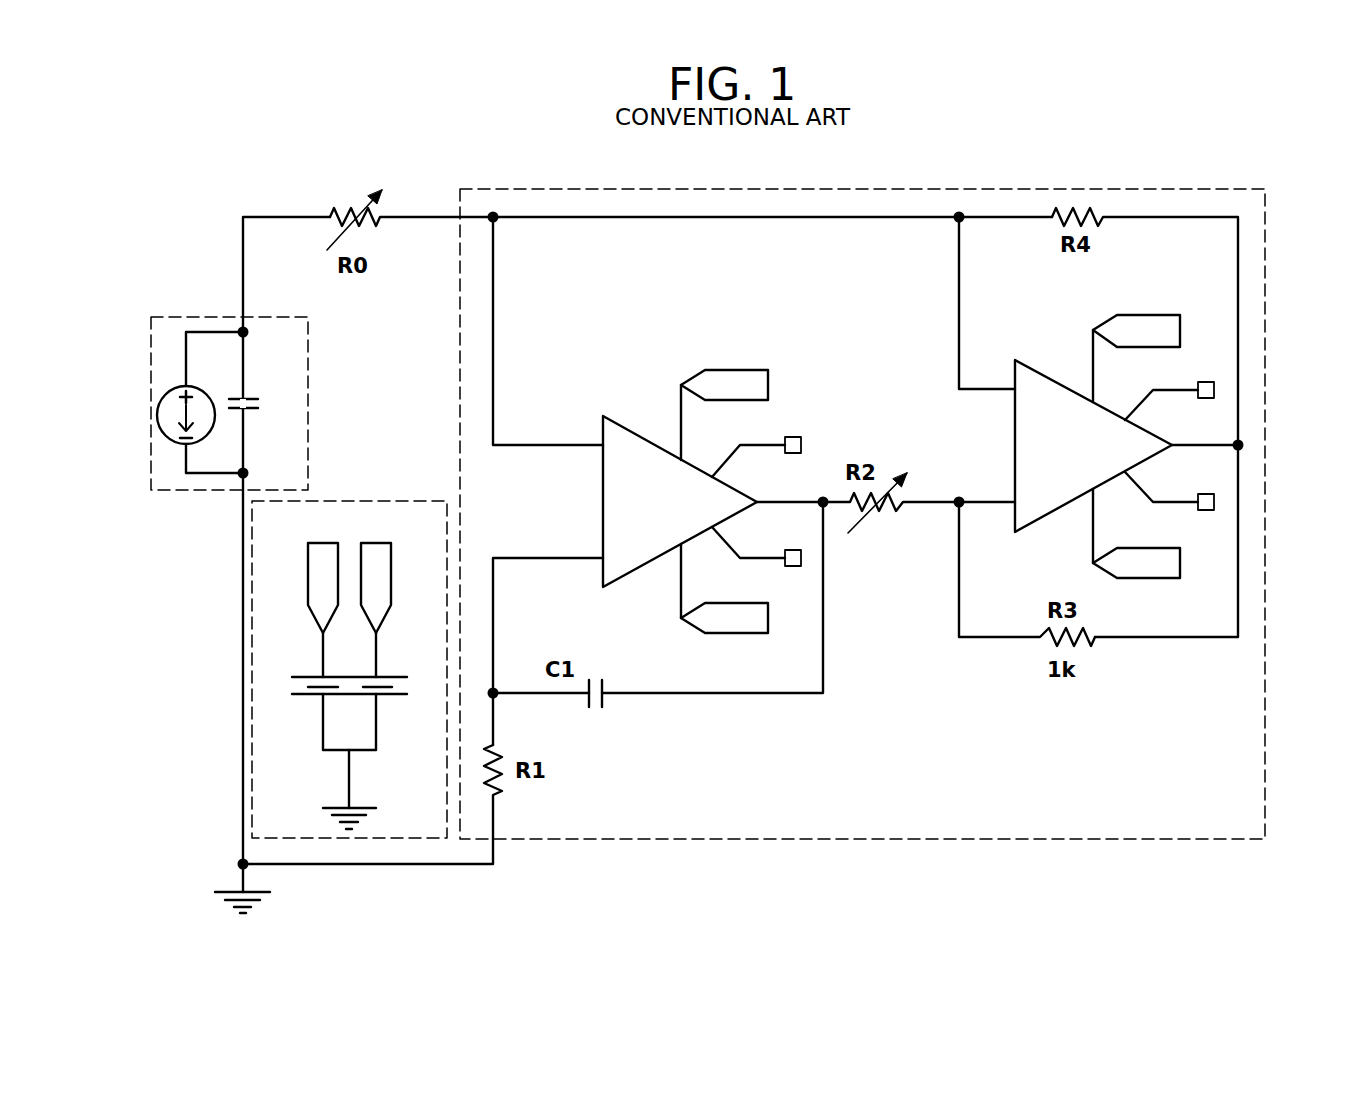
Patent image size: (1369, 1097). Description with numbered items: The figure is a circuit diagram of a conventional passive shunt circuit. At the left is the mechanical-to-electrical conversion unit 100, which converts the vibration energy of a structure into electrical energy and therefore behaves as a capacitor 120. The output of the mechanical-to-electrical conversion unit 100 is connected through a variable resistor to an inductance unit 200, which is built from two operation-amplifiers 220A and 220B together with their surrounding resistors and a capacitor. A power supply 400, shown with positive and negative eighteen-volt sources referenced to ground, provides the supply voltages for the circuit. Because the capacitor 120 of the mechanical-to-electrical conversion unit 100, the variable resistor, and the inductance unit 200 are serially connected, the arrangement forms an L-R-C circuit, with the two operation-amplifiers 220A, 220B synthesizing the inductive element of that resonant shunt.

The mechanical-to-electrical conversion unit 100 is at (173, 490).
The capacitor 120 is at (240, 400).
The inductance unit 200 is at (1265, 675).
The operation-amplifier 220A is at (642, 460).
The operation-amplifier 220B is at (1028, 430).
The power supply 400 is at (373, 838).